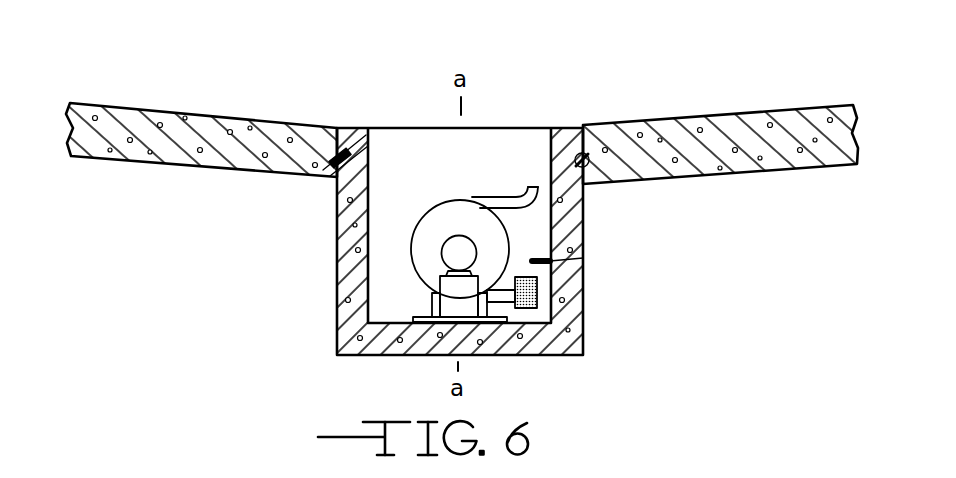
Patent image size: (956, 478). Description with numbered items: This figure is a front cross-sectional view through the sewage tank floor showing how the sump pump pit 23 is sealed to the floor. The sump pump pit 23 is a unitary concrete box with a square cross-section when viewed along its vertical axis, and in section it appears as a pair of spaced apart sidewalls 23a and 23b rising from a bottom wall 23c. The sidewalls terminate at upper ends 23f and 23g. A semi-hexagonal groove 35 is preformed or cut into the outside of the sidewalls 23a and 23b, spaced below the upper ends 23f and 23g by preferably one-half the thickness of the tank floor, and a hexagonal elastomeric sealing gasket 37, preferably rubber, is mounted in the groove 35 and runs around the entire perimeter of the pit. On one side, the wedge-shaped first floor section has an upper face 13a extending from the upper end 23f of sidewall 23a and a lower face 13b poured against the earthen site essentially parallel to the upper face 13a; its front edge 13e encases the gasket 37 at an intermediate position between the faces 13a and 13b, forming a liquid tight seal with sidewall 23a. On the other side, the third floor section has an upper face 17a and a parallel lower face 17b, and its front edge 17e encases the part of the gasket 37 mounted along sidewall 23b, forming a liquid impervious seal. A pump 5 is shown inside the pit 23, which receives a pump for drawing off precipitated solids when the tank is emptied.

The detector unit 5 is at (437, 206).
The upper face 13a is at (720, 130).
The lower face 13b is at (720, 166).
The front edge 13e is at (627, 181).
The upper face 17a is at (201, 138).
The lower face 17b is at (201, 169).
The front edge 17e is at (323, 178).
The sump pump pit 23 is at (480, 210).
The sidewall 23a is at (480, 210).
The sidewall 23b is at (431, 210).
The bottom wall 23c is at (457, 210).
The upper end 23f is at (450, 184).
The upper end 23g is at (348, 127).
The semi-hexagonal groove 35 is at (472, 114).
The sealing gasket 37 is at (333, 153).